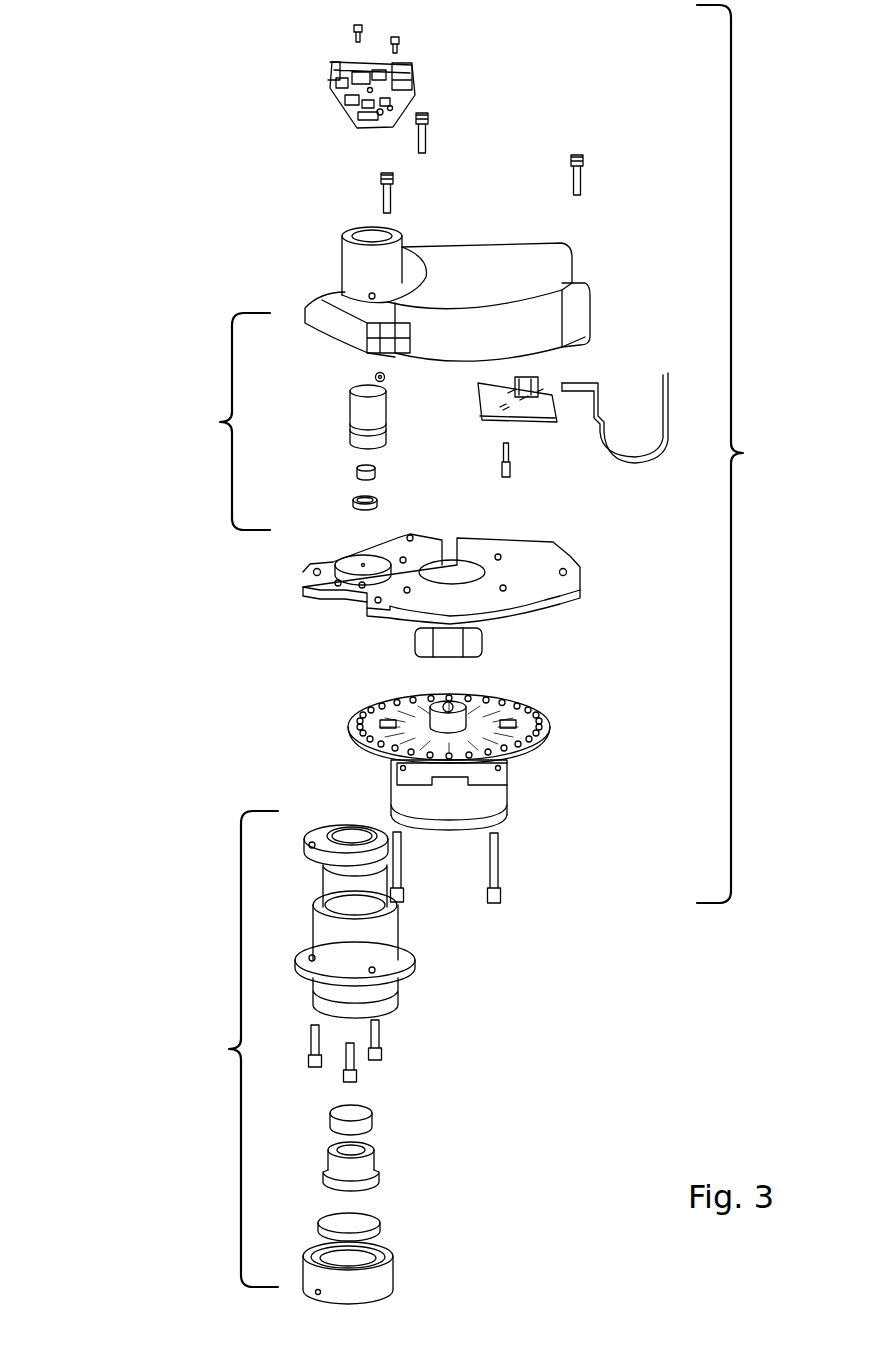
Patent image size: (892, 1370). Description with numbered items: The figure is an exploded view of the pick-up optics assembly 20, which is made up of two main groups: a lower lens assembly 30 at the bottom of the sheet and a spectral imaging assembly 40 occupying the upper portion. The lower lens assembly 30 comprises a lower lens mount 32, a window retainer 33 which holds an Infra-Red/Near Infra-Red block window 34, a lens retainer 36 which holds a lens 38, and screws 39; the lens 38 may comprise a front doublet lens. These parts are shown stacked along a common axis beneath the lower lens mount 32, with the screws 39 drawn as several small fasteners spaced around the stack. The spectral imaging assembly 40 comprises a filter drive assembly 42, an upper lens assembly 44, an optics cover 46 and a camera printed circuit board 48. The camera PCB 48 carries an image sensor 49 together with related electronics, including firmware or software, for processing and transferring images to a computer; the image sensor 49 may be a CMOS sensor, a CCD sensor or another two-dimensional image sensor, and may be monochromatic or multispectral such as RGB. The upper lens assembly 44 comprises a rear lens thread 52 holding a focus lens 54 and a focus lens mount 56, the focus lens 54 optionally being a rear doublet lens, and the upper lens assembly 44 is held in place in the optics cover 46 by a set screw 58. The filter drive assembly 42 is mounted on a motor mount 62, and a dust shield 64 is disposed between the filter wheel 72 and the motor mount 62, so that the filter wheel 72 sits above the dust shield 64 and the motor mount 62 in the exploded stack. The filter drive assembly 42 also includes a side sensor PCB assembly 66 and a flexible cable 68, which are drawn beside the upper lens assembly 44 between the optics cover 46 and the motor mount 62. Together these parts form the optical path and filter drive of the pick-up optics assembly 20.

The pick-up optics assembly 20 is at (102, 760).
The lower lens assembly 30 is at (235, 1049).
The lower lens mount 32 is at (412, 965).
The window retainer 33 is at (392, 1258).
The Infra-Red/Near Infra-Red block window 34 is at (373, 1220).
The lens retainer 36 is at (380, 1160).
The lens 38 is at (372, 1117).
The screws 39 is at (393, 37).
The spectral imaging assembly 40 is at (745, 454).
The filter drive assembly 42 is at (545, 720).
The upper lens assembly 44 is at (220, 421).
The optics cover 46 is at (562, 283).
The camera printed circuit board (PCB) 48 is at (412, 88).
The image sensor 49 is at (348, 120).
The rear lens thread 52 is at (353, 505).
The focus lens 54 is at (357, 472).
The focus lens mount 56 is at (350, 408).
The set screw 58 is at (378, 372).
The motor mount 62 is at (550, 558).
The dust shield 64 is at (415, 641).
The side sensor PCB assembly 66 is at (515, 420).
The flexible cable 68 is at (617, 453).
The filter wheel 72 is at (348, 716).